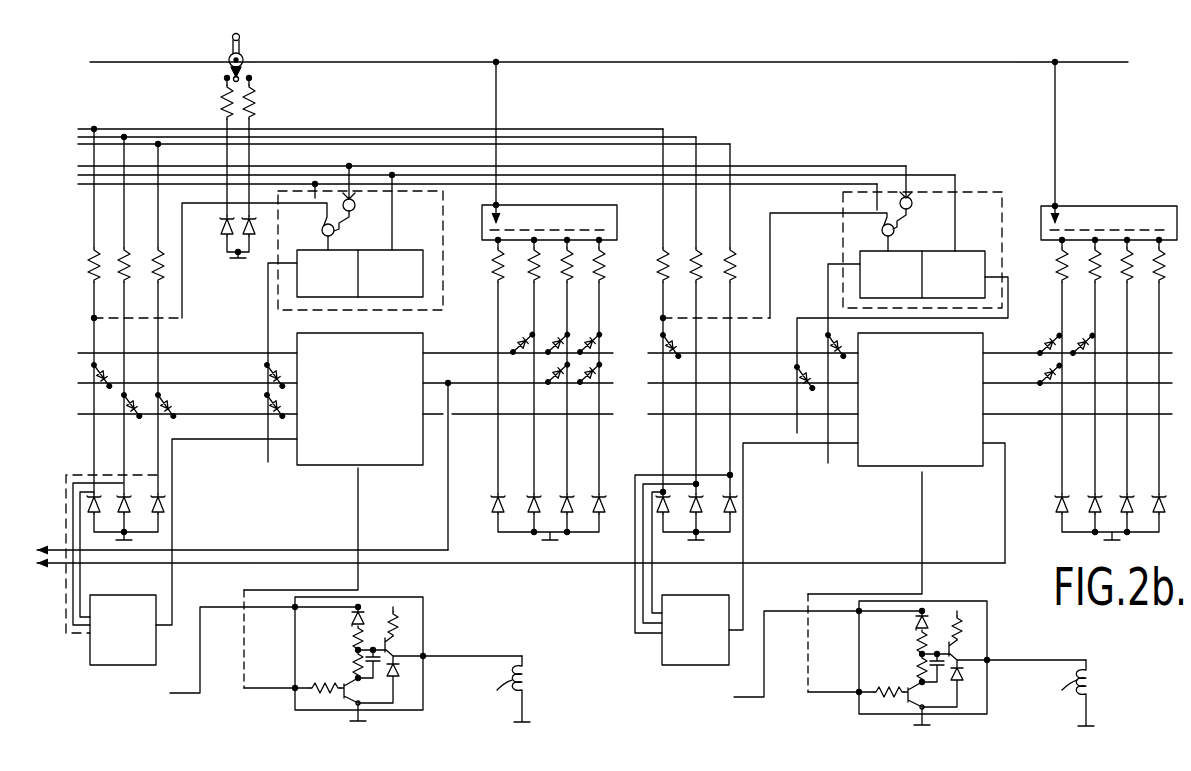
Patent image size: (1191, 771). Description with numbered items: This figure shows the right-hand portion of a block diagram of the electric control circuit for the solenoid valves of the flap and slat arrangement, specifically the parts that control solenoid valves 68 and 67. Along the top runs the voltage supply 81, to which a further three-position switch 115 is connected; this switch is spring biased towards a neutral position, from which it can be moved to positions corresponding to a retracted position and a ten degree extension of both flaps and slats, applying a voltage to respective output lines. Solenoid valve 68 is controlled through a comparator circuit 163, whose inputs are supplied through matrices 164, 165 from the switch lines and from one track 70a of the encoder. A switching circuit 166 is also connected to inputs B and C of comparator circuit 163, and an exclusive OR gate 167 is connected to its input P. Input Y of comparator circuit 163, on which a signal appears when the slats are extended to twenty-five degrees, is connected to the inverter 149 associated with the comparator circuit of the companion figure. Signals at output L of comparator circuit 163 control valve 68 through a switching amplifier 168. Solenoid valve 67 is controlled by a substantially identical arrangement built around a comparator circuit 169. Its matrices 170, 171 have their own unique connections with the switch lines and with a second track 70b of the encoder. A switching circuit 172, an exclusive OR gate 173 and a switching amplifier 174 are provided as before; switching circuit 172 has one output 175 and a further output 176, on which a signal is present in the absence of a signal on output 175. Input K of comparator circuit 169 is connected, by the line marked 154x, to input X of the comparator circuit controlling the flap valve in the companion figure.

The voltage supply 81 is at (692, 61).
The three-position switch 115 is at (267, 58).
The encoder track 70a is at (604, 222).
The encoder track 70b is at (1115, 213).
The matrix 164 is at (176, 349).
The matrix 165 is at (492, 350).
The switching circuit 166 is at (437, 243).
The comparator circuit 163 is at (388, 466).
The exclusive OR gate 167 is at (118, 618).
The switching amplifier 168 is at (415, 625).
The solenoid valve 68 is at (497, 697).
The inverter 149 is at (242, 538).
The input X of comparator circuit 154x is at (519, 574).
The matrix 170 is at (772, 337).
The matrix 171 is at (1040, 337).
The switching circuit 172 is at (970, 203).
The output 175 is at (825, 300).
The output 176 is at (1010, 289).
The comparator circuit 169 is at (882, 453).
The exclusive OR gate 173 is at (690, 618).
The switching amplifier 174 is at (978, 628).
The solenoid valve 67 is at (1060, 696).